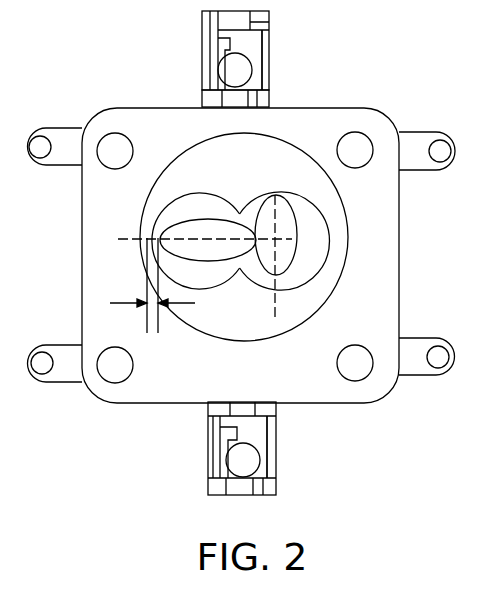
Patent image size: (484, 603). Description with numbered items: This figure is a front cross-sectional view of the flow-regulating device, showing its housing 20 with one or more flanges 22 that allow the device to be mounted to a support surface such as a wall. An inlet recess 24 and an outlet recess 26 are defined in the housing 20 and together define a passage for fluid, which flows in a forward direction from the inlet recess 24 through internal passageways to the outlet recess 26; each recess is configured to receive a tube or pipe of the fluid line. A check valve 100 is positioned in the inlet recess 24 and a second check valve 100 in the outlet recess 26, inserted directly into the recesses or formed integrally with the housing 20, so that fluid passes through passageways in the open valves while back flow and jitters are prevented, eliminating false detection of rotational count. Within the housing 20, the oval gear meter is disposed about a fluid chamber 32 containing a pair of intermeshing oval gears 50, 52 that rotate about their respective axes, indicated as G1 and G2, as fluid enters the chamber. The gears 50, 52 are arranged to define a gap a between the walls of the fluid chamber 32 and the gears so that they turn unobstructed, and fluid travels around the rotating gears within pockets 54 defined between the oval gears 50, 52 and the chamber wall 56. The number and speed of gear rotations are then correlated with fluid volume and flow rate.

The housing 20 is at (387, 268).
The flanges 22 is at (71, 142).
The inlet recess 24 is at (208, 455).
The outlet recess 26 is at (202, 55).
The fluid chamber 32 is at (250, 265).
The oval gear 50 is at (225, 258).
The oval gear 52 is at (282, 208).
The pockets 54 is at (195, 207).
The chamber wall 56 is at (248, 197).
The check valve 100 is at (262, 41).
The first axis G1 is at (122, 236).
The second axis G2 is at (284, 306).
The gap a is at (148, 285).